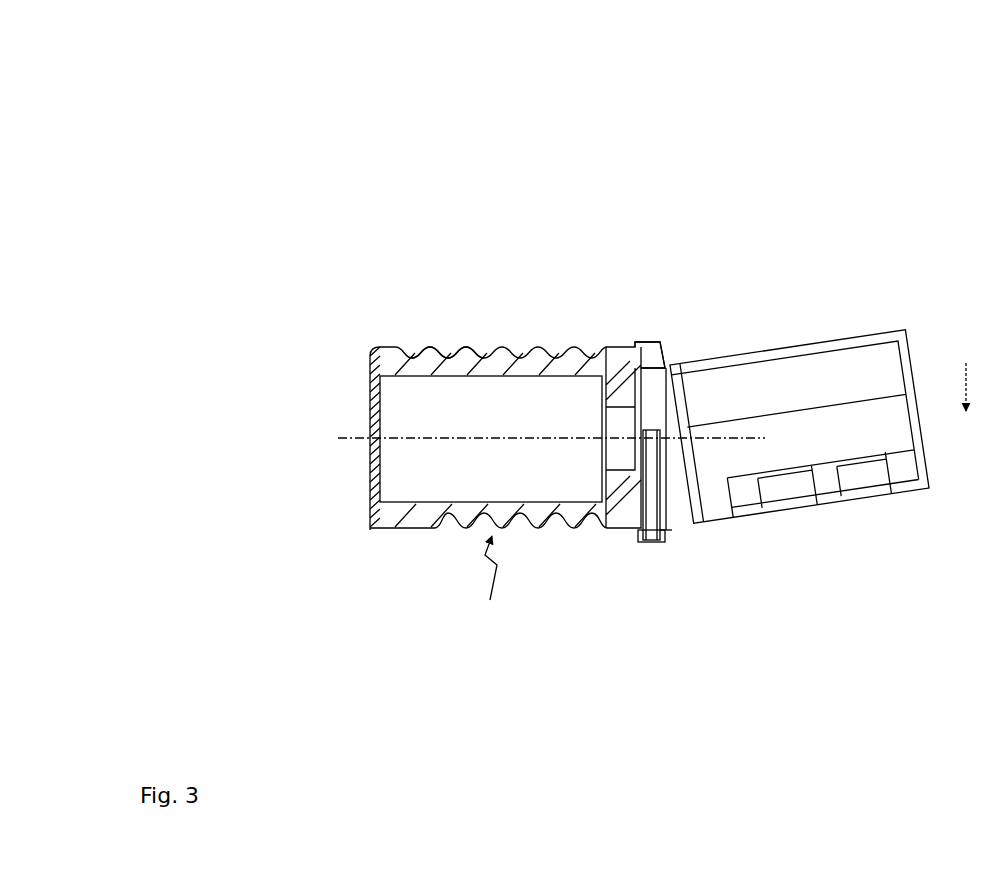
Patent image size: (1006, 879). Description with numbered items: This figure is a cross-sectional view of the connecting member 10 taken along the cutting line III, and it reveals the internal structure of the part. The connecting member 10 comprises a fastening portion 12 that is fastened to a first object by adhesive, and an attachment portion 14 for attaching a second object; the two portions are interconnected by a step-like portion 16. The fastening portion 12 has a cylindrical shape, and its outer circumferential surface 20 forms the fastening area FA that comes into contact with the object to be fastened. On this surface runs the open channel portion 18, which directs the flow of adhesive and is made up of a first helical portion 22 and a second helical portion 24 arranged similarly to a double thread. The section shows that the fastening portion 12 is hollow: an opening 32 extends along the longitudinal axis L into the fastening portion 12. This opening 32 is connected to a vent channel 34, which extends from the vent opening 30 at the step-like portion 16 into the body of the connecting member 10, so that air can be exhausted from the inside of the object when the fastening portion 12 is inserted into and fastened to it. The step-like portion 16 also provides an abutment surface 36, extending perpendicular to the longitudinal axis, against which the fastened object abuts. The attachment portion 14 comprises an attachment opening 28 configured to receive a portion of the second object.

The connecting member 10 is at (868, 135).
The fastening portion 12 is at (620, 295).
The attachment portion 14 is at (945, 312).
The step-like portion 16 is at (658, 343).
The open channel portion 18 is at (518, 332).
The outer circumferential surface 20 is at (393, 533).
The first helical portion 22 is at (414, 348).
The second helical portion 24 is at (448, 348).
The attachment opening 28 is at (768, 350).
The vent opening 30 is at (650, 542).
The opening 32 is at (368, 484).
The vent channel 34 is at (670, 532).
The abutment surface 36 is at (633, 537).
The longitudinal axis L is at (529, 435).
The fastening area FA is at (488, 580).
The cutting line III- III is at (978, 383).